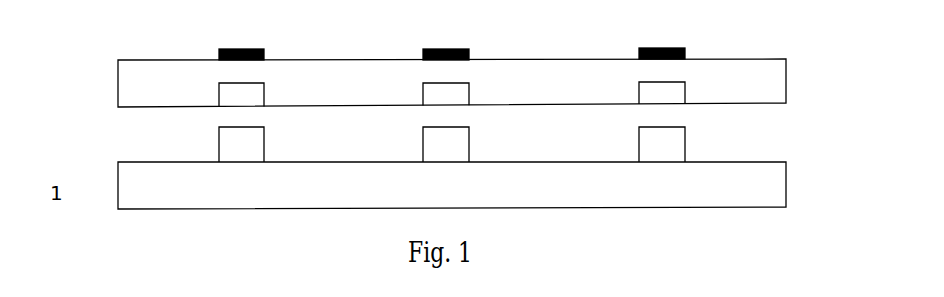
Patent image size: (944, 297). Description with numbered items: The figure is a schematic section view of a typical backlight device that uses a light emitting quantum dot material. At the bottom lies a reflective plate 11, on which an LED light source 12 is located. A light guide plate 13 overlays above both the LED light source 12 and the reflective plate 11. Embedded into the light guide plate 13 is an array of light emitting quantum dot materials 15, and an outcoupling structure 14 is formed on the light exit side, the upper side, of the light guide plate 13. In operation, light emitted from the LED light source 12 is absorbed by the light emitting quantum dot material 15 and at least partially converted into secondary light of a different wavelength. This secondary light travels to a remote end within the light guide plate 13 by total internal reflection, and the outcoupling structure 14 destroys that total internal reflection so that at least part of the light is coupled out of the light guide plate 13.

The reflective plate 11 is at (752, 183).
The LED light source 12 is at (667, 147).
The light guide plate 13 is at (750, 83).
The outcoupling structure 14 is at (219, 53).
The light emitting quantum dot material 15 is at (232, 96).